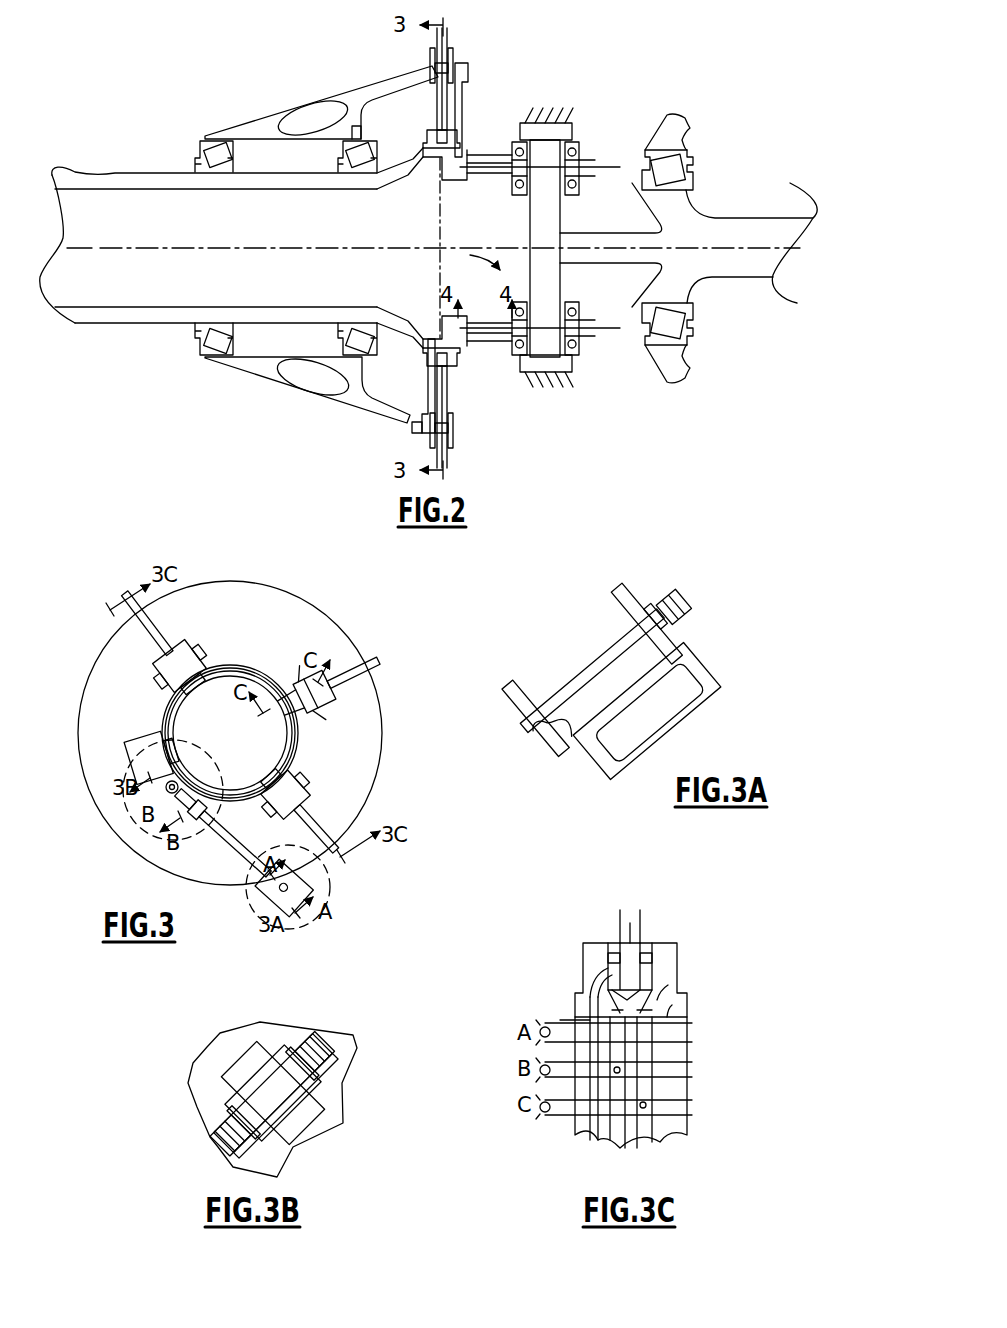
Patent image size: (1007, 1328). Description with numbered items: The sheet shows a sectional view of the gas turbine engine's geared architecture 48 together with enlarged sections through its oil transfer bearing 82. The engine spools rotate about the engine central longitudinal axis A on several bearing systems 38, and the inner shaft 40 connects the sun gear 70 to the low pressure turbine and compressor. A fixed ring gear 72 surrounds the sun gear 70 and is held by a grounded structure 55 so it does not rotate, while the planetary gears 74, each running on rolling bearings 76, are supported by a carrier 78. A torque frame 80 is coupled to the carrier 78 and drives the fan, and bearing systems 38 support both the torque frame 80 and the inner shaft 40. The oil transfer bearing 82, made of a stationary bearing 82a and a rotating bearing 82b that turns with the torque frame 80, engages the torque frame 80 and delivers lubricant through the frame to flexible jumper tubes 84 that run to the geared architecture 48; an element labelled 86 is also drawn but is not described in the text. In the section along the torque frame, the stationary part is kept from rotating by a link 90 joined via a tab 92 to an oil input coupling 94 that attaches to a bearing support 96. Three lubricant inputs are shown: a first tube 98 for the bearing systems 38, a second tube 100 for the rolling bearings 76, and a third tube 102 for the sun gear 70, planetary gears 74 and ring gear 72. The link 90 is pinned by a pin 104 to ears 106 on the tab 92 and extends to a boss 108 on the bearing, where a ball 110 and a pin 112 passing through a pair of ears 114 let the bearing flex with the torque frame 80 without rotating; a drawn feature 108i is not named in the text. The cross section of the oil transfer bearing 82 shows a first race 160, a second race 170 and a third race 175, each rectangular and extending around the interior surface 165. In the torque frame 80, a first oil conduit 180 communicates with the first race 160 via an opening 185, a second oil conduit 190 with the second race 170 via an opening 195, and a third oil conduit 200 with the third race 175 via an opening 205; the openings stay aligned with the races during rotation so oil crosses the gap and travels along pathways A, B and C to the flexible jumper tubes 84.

In FIG. 2, the engine central longitudinal axis A is at (65, 245).
In FIG. 2, the bearing systems 38 is at (198, 150).
In FIG. 2, the inner shaft 40 is at (710, 280).
In FIG. 2, the geared architecture 48 is at (440, 248).
In FIG. 2, the grounded structure 55 is at (538, 110).
In FIG. 2, the sun gear 70 is at (530, 233).
In FIG. 2, the fixed ring gear 72 is at (575, 125).
In FIG. 2, the planetary gears 74 is at (560, 175).
In FIG. 2, the rolling bearings 76 is at (580, 160).
In FIG. 2, the carrier 78 is at (580, 148).
In FIG. 2, the torque frame 80 is at (395, 290).
In FIG. 3C, the torque frame 80 is at (690, 1023).
In FIG. 2, the oil transfer bearing 82 is at (462, 128).
In FIG. 3, the oil transfer bearing 82 is at (340, 600).
In FIG. 3C, the oil transfer bearing 82 is at (580, 928).
In FIG. 2, the stationary bearing 82a is at (437, 130).
In FIG. 3C, the stationary bearing 82a is at (614, 940).
In FIG. 2, the rotating bearing 82b is at (435, 170).
In FIG. 3C, the rotating bearing 82b is at (690, 1018).
In FIG. 2, the flexible jumper tubes 84 is at (482, 175).
In FIG. 2, the shaft extension 86 is at (580, 178).
In FIG. 2, the link 90 is at (415, 398).
In FIG. 3, the link 90 is at (245, 868).
In FIG. 3A, the link 90 is at (548, 640).
In FIG. 3B, the link 90 is at (312, 1150).
In FIG. 2, the tab 92 is at (412, 428).
In FIG. 3, the tab 92 is at (318, 885).
In FIG. 3A, the tab 92 is at (718, 705).
In FIG. 2, the oil input coupling 94 is at (453, 62).
In FIG. 2, the bearing support 96 is at (395, 78).
In FIG. 3, the first tube 98 is at (165, 625).
In FIG. 3, the second tube 100 is at (372, 657).
In FIG. 3C, the second tube 100 is at (642, 932).
In FIG. 3, the third tube 102 is at (300, 818).
In FIG. 3A, the pin 104 is at (606, 637).
In FIG. 3A, the ears 106 is at (688, 662).
In FIG. 3B, the boss 108 is at (255, 1030).
In FIG. 3, the clamp 108i is at (150, 730).
In FIG. 3B, the ball 110 is at (230, 1073).
In FIG. 3B, the pin 112 is at (320, 1082).
In FIG. 3B, the ears 114 is at (283, 1035).
In FIG. 3C, the first race 160 is at (603, 1013).
In FIG. 3C, the interior surface 165 is at (672, 1013).
In FIG. 3C, the second race 170 is at (630, 977).
In FIG. 3C, the third race 175 is at (657, 1000).
In FIG. 3C, the first oil conduit 180 is at (623, 980).
In FIG. 3C, the opening 185 is at (580, 1013).
In FIG. 3C, the second oil conduit 190 is at (680, 1070).
In FIG. 3C, the opening 195 is at (613, 1070).
In FIG. 3C, the third oil conduit 200 is at (680, 1107).
In FIG. 3C, the opening 205 is at (646, 1106).